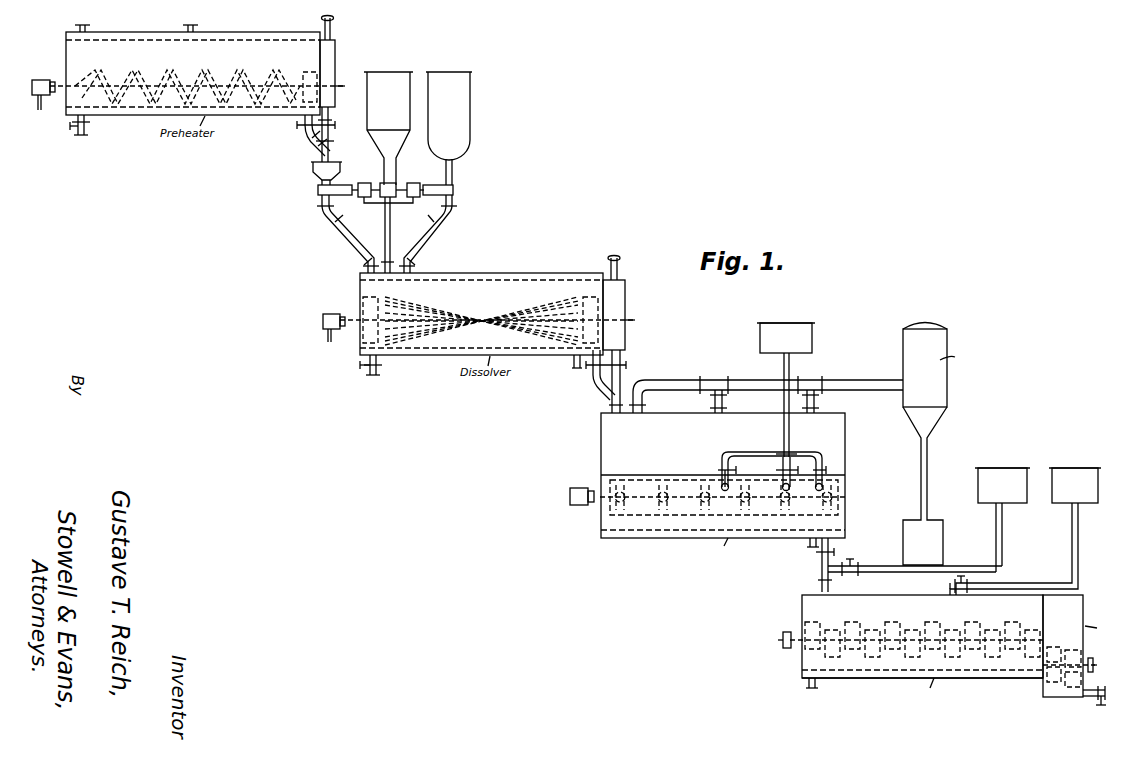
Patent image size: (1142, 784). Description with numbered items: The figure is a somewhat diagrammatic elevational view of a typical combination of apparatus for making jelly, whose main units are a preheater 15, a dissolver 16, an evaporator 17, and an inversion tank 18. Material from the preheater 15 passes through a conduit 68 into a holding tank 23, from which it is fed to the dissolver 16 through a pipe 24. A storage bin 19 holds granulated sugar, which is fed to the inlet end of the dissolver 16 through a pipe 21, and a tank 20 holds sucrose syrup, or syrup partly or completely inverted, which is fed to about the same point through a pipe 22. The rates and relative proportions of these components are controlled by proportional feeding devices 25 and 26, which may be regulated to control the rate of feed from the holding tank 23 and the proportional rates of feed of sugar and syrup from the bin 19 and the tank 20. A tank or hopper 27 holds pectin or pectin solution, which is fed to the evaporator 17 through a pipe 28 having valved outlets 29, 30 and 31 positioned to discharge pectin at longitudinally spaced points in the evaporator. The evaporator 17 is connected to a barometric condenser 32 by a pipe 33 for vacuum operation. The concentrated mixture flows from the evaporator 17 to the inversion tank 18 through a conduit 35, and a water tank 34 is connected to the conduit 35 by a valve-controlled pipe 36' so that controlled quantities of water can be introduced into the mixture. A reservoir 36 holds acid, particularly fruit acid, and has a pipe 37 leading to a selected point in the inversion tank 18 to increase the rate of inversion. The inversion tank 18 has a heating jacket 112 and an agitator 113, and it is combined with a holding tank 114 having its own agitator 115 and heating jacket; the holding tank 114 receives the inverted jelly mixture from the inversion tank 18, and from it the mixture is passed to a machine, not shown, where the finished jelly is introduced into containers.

The preheater 15 is at (220, 38).
The conduit 68 is at (330, 138).
The holding tank 23 is at (312, 175).
The storage bin 19 is at (403, 112).
The tank 20 is at (470, 112).
The proportional feeding device 25 is at (365, 183).
The proportional feeding device 26 is at (413, 183).
The pipe 21 is at (390, 221).
The pipe 24 is at (345, 238).
The pipe 22 is at (433, 236).
The dissolver 16 is at (503, 275).
The pipe 33 is at (754, 384).
The evaporator 17 is at (601, 449).
The tank or hopper 27 is at (812, 330).
The pipe 28 is at (784, 433).
The valved outlet 29 is at (720, 465).
The valved outlet 30 is at (782, 468).
The valved outlet 31 is at (822, 468).
The barometric condenser 32 is at (903, 352).
The conduit 35 is at (822, 563).
The valve-controlled pipe 36' is at (915, 539).
The water tank 34 is at (978, 487).
The reservoir 36 is at (1086, 485).
The pipe 37 is at (1043, 586).
The inversion tank 18 is at (890, 602).
The agitator 113 is at (975, 620).
The holding tank 114 is at (1085, 612).
The agitator 115 is at (1054, 647).
The heating jacket 112 is at (866, 680).